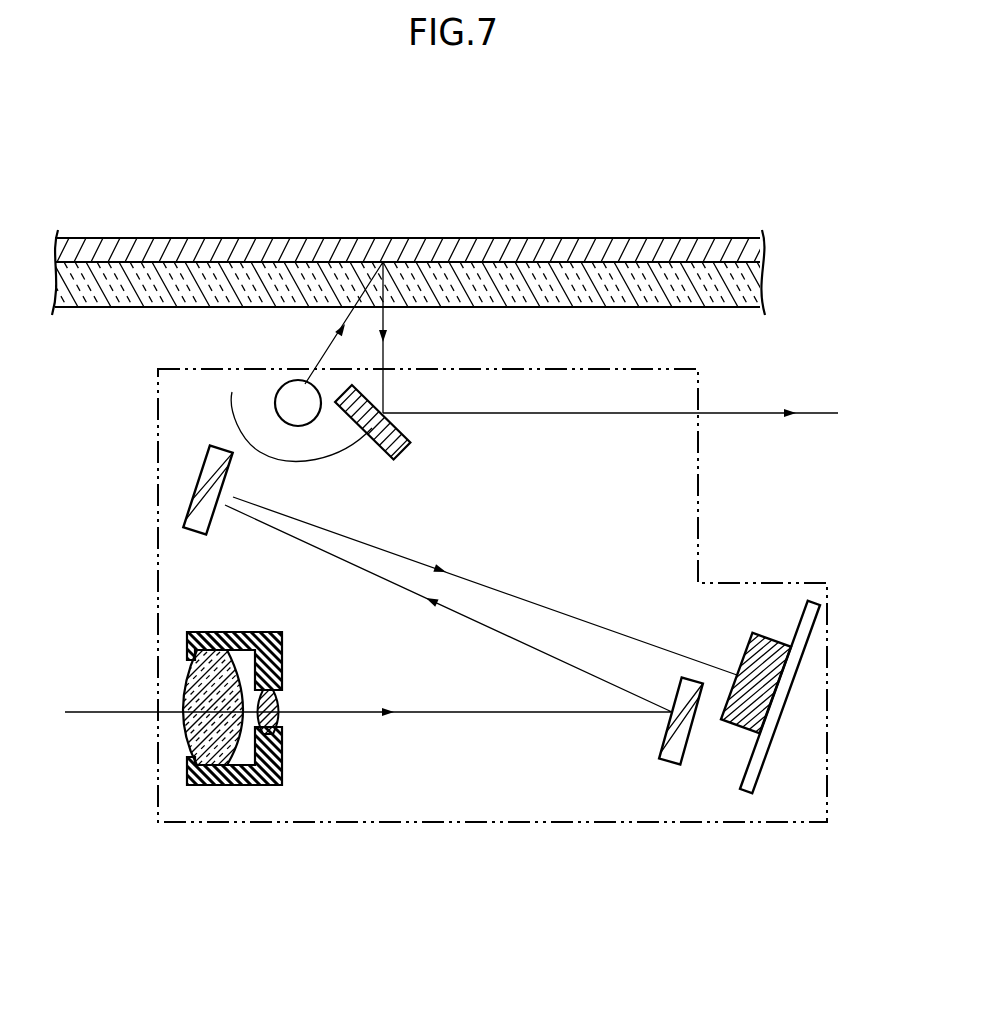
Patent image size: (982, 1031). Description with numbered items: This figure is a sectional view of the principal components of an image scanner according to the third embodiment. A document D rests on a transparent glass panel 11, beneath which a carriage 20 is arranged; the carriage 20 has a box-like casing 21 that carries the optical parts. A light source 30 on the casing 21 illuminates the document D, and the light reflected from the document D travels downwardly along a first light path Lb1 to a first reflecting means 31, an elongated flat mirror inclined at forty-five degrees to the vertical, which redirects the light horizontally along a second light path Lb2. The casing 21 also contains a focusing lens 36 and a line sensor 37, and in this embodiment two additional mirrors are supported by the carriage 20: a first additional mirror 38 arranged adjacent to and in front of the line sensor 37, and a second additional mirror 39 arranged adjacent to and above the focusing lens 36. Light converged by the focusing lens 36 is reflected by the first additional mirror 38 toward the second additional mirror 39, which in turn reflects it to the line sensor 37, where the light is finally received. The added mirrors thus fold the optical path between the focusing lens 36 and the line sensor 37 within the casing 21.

The glass panel 11 is at (515, 282).
The document D is at (620, 250).
The carriage 20 is at (492, 595).
The casing 21 is at (783, 582).
The light source 30 is at (281, 381).
The first reflecting means 31 is at (232, 392).
The focusing lens 36 is at (205, 785).
The line sensor 37 is at (750, 728).
The first additional mirror 38 is at (663, 740).
The second additional mirror 39 is at (190, 498).
The first light path Lb1 is at (383, 355).
The second light path Lb2 is at (740, 411).